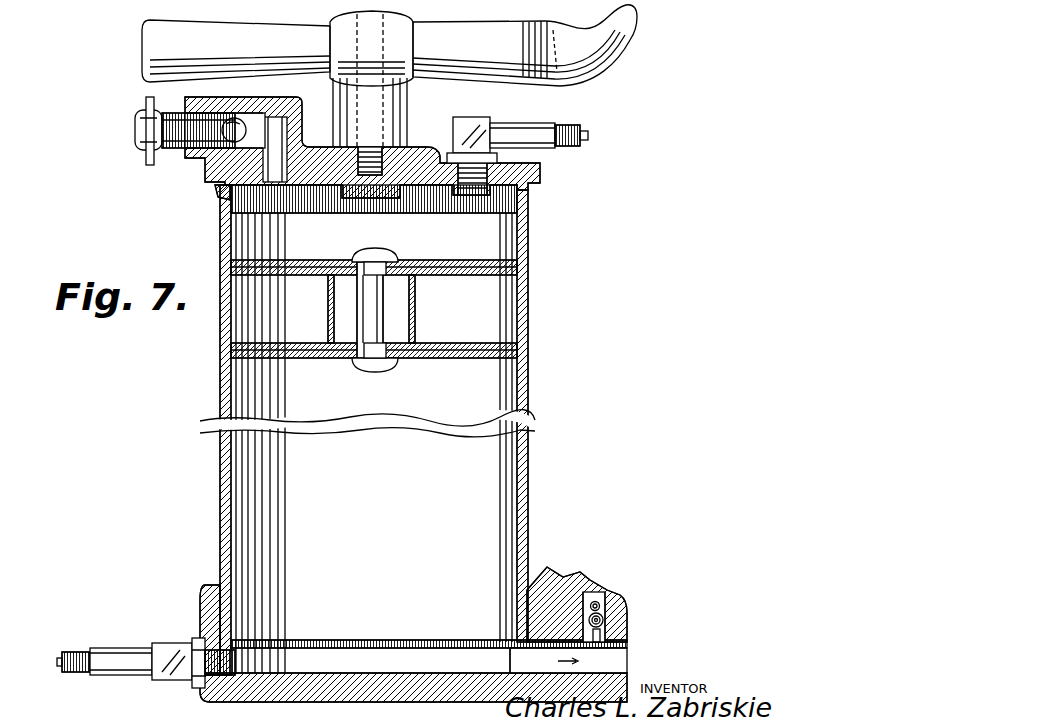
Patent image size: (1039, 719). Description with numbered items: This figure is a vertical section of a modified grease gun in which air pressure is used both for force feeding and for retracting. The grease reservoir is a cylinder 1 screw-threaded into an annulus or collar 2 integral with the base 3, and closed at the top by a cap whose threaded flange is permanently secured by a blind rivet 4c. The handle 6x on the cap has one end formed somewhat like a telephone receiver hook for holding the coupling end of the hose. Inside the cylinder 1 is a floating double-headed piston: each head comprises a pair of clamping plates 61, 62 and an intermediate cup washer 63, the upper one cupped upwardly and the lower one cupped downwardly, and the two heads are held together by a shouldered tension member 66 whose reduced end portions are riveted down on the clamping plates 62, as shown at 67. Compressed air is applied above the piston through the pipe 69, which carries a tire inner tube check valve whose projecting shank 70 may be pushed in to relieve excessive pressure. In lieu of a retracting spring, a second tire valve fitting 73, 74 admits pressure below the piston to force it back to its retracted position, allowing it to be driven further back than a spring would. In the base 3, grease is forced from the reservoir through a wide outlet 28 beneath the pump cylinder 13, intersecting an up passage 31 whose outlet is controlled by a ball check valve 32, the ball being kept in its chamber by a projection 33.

The handle 6x is at (168, 32).
The blind rivet 4c is at (222, 192).
The pipe with tire valve 69 is at (568, 124).
The projecting shank 70 is at (590, 136).
The cylinder 1 is at (220, 416).
The clamping plate 62 is at (518, 258).
The cup washer 63 is at (528, 263).
The clamping plate 61 is at (528, 288).
The tension member 66 is at (373, 313).
The riveted end 67 is at (380, 258).
The annulus or collar 2 is at (207, 592).
The base 3 is at (297, 688).
The outlet 28 is at (612, 660).
The pump cylinder 13 is at (617, 610).
The projection 33 is at (597, 604).
The ball check valve 32 is at (603, 618).
The up passage 31 is at (601, 634).
The tire valve fitting 73 is at (100, 660).
The tire valve fitting 74 is at (58, 664).